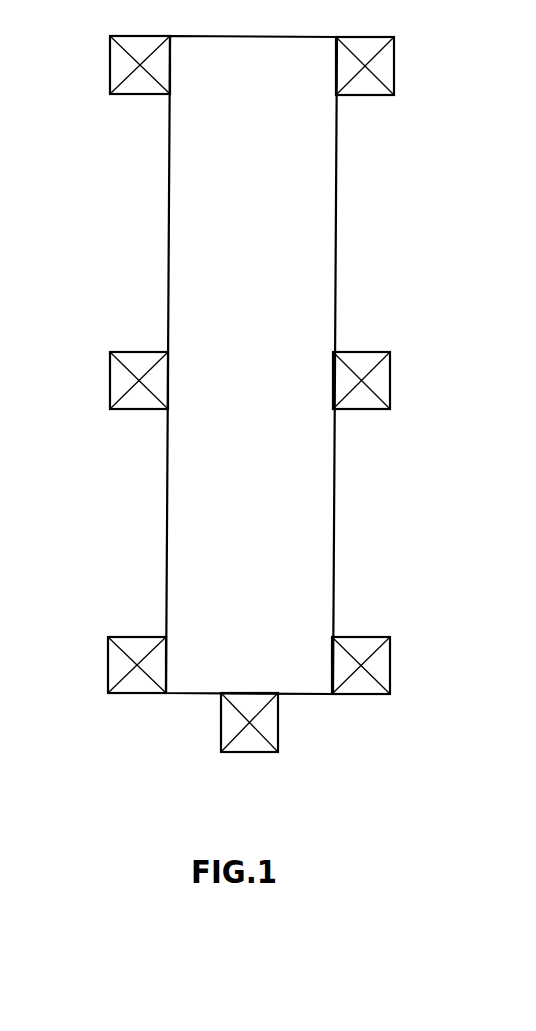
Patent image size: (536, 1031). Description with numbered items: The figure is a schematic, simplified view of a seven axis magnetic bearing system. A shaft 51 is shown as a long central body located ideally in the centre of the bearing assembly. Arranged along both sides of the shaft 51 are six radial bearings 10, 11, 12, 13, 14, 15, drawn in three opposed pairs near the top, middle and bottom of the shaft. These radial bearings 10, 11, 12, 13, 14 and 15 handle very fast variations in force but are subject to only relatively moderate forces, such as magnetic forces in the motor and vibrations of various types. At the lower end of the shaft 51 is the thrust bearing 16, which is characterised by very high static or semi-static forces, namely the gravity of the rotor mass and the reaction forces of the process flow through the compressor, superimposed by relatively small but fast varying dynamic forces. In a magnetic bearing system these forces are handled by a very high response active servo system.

The radial bearing 10 is at (395, 78).
The radial bearing 11 is at (111, 72).
The radial bearing 12 is at (112, 380).
The radial bearing 13 is at (393, 377).
The radial bearing 14 is at (108, 665).
The radial bearing 15 is at (391, 669).
The thrust bearing 16 is at (262, 726).
The shaft 51 is at (251, 365).